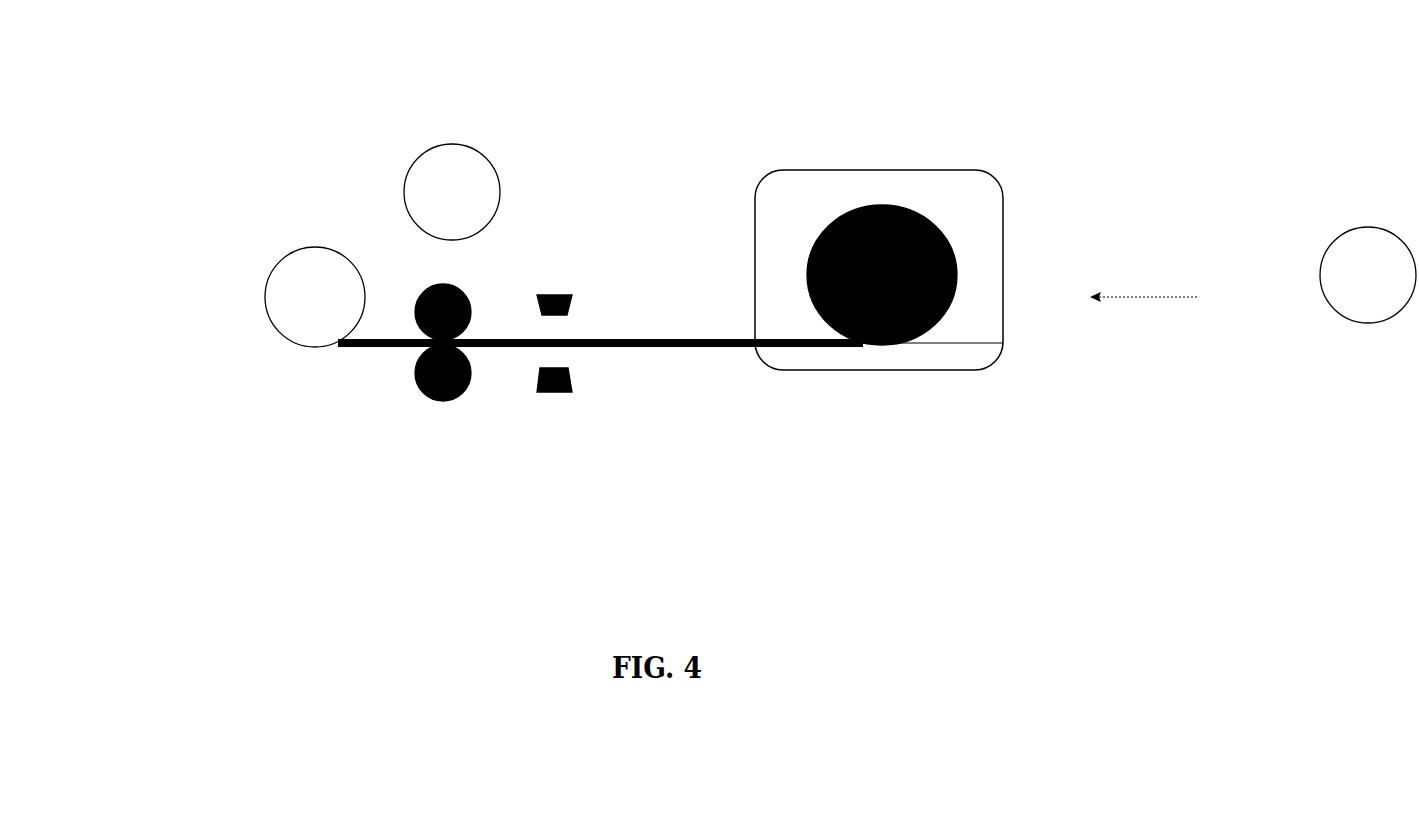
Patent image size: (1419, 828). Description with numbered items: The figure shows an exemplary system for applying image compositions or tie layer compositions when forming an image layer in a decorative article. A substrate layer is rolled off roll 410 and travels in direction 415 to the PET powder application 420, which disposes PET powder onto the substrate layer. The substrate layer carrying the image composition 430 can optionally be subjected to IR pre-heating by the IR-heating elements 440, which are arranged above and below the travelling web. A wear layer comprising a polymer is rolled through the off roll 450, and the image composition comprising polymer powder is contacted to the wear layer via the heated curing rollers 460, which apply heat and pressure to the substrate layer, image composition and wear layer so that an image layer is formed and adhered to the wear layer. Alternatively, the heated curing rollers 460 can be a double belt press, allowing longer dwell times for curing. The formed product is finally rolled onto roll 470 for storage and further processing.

The roll 410 is at (1250, 343).
The direction 415 is at (1115, 293).
The PET powder application 420 is at (882, 169).
The image composition 430 is at (693, 324).
The IR-heating elements 440 is at (573, 320).
The off roll 450 is at (470, 300).
The heated curing rollers 460 is at (458, 433).
The roll 470 is at (280, 333).